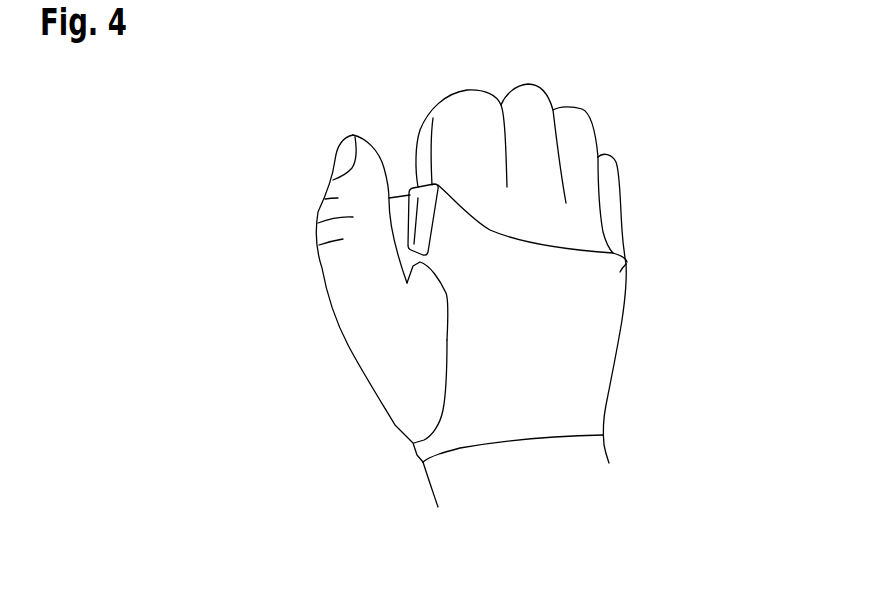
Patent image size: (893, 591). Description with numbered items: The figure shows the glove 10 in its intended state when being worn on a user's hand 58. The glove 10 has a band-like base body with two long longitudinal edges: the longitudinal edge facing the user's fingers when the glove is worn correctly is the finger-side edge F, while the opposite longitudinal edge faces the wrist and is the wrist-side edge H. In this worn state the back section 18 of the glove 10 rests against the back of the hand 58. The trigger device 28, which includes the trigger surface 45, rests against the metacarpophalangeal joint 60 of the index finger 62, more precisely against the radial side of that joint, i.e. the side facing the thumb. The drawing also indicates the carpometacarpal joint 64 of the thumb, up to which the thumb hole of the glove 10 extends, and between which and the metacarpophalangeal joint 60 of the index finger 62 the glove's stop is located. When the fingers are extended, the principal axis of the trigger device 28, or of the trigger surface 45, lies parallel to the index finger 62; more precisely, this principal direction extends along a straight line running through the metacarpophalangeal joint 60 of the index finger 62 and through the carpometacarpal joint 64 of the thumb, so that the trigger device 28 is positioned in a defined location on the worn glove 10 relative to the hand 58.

The glove 10 is at (627, 262).
The back section 18 is at (553, 332).
The trigger device 28 is at (433, 188).
The trigger surface 45 is at (403, 230).
The hand 58 is at (585, 133).
The metacarpophalangeal joint 60 is at (407, 258).
The index finger 62 is at (445, 137).
The carpometacarpal joint 64 is at (395, 378).
The finger-side edge F is at (533, 237).
The wrist-side edge H is at (543, 439).